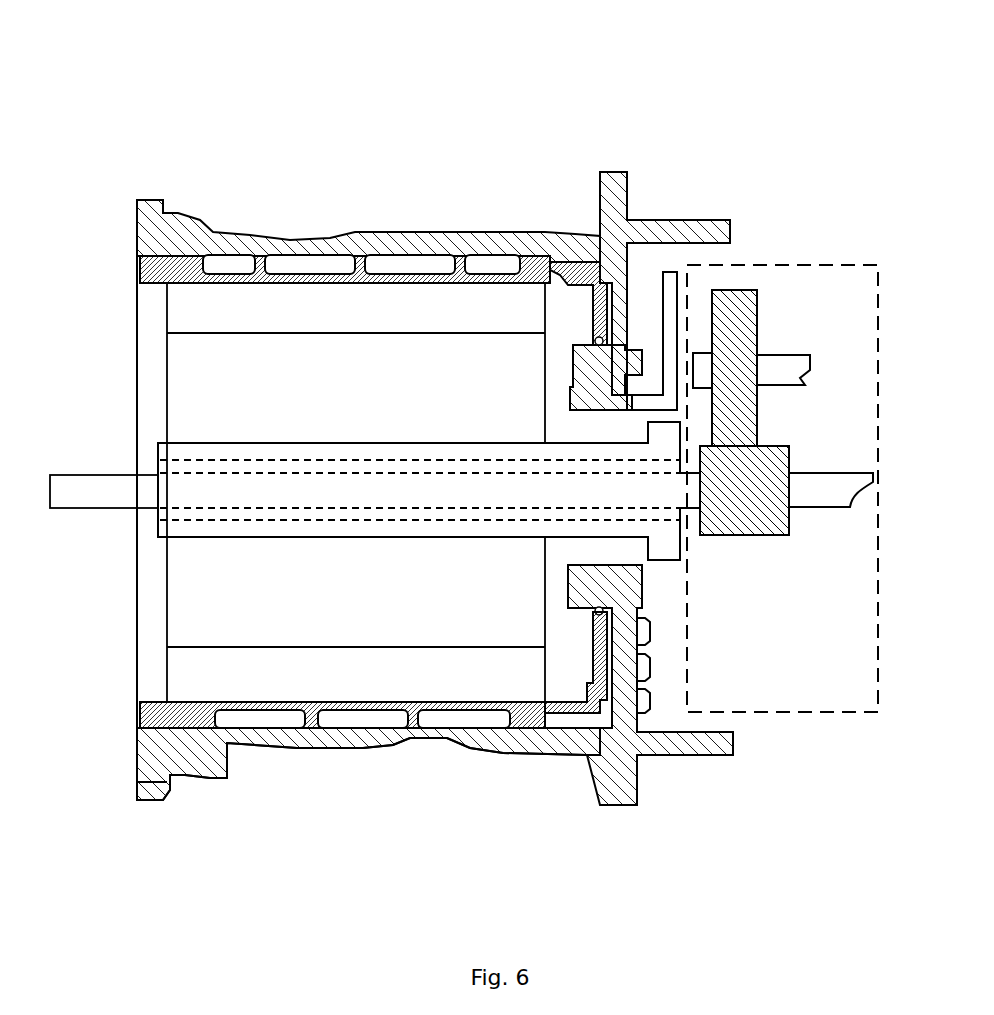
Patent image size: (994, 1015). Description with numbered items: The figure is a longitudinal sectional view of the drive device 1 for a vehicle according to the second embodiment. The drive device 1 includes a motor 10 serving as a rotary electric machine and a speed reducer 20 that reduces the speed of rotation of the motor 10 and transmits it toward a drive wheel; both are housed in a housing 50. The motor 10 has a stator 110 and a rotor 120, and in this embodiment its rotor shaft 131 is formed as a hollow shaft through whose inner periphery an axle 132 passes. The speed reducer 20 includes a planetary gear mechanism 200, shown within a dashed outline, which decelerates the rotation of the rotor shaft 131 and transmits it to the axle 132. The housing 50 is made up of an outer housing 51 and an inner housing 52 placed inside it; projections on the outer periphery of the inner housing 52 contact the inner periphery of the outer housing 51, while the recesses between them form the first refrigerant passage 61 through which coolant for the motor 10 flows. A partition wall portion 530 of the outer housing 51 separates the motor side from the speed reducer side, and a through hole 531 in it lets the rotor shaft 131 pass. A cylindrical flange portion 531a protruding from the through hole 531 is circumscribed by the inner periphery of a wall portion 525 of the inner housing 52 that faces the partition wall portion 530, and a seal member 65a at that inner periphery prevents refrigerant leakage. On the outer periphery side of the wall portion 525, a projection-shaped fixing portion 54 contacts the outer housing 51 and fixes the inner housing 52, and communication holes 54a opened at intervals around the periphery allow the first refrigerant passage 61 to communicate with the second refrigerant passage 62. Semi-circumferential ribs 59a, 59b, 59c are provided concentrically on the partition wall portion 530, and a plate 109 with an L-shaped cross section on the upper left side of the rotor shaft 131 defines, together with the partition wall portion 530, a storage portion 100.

The drive device 1 is at (632, 108).
The motor 10 is at (367, 398).
The speed reducer 20 is at (815, 238).
The housing 50 is at (495, 475).
The outer housing 51 is at (385, 250).
The inner housing 52 is at (350, 256).
The fixing portion 54 is at (565, 233).
The communication holes 54a is at (578, 268).
The rib 59a is at (650, 632).
The rib 59b is at (650, 668).
The rib 59c is at (650, 700).
The first refrigerant passage 61 is at (293, 256).
The second refrigerant passage 62 is at (612, 320).
The seal member 65a is at (600, 612).
The storage portion 100 is at (655, 330).
The plate 109 is at (668, 302).
The stator 110 is at (187, 300).
The rotor 120 is at (190, 367).
The rotor shaft 131 is at (178, 455).
The axle 132 is at (107, 490).
The planetary gear mechanism 200 is at (868, 265).
The wall portion 525 is at (592, 318).
The partition wall portion 530 is at (655, 320).
The through hole 531 is at (622, 410).
The cylindrical flange portion 531a is at (590, 345).